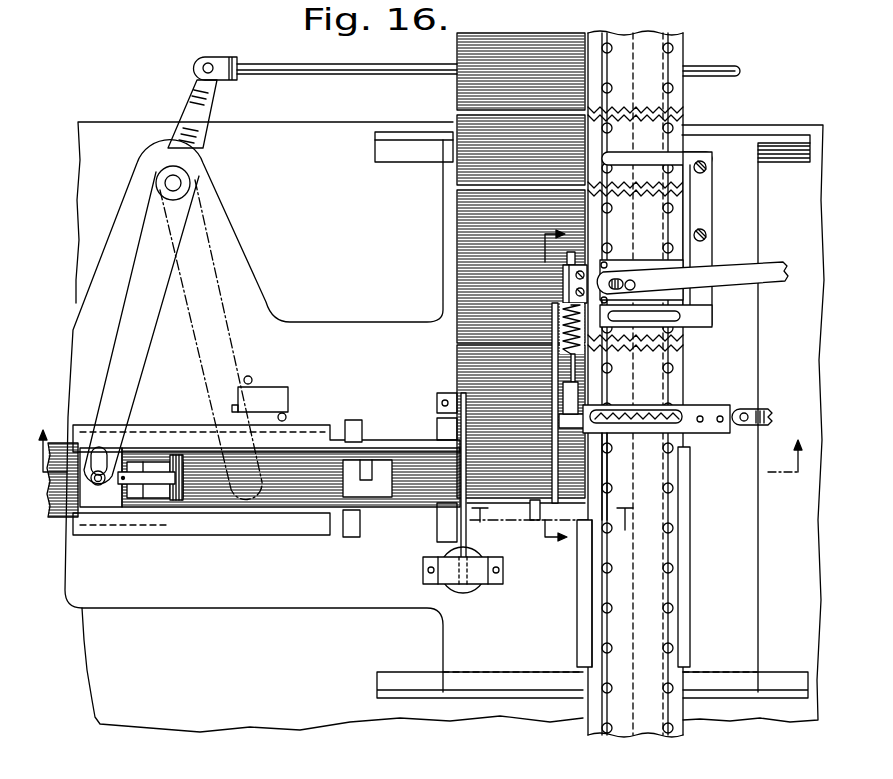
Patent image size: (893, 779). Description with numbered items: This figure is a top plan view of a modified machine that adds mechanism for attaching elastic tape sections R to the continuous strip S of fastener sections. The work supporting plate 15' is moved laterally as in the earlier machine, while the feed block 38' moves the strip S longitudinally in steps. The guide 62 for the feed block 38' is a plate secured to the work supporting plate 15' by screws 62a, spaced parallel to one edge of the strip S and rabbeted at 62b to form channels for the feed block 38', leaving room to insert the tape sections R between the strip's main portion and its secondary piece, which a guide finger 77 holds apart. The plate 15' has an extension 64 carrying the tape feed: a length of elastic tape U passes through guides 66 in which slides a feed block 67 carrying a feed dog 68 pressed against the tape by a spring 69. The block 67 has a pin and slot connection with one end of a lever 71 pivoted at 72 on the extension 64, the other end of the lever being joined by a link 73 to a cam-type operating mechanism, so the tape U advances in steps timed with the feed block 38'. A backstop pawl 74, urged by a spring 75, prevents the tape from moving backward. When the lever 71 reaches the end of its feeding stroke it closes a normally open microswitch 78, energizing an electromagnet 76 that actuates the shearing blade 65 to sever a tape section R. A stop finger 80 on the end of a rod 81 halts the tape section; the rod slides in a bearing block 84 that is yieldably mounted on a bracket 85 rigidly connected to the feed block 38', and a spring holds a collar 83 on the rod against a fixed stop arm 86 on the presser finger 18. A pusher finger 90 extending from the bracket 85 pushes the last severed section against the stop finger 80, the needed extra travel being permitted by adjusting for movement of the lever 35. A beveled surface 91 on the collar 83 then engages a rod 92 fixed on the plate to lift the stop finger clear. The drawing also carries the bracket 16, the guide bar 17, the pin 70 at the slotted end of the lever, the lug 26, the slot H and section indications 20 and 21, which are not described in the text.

The work supporting plate 15' is at (746, 129).
The bracket 16 is at (415, 136).
The guide bar 17 is at (703, 627).
The presser finger 18 is at (688, 408).
The section line 20 is at (424, 438).
The section line 21 is at (530, 539).
The lug 26 is at (768, 413).
The lever 35 is at (770, 280).
The feed block 38' is at (695, 278).
The guide 62 is at (687, 158).
The screws 62a is at (700, 230).
The rabbet 62b is at (680, 193).
The extension 64 is at (343, 322).
The shearing blade 65 is at (463, 432).
The guides 66 is at (240, 520).
The feed block 67 is at (152, 462).
The feed dog 68 is at (182, 460).
The spring 69 is at (160, 472).
The pin 70 is at (98, 470).
The lever 71 is at (130, 340).
The pivot 72 is at (178, 182).
The link 73 is at (317, 72).
The backstop pawl 74 is at (376, 520).
The spring 75 is at (362, 460).
The electromagnet 76 is at (462, 592).
The guide finger 77 is at (615, 542).
The microswitch 78 is at (262, 395).
The stop finger 80 is at (570, 418).
The rod 81 is at (550, 320).
The collar 83 is at (572, 393).
The bearing block 84 is at (567, 258).
The bracket 85 is at (563, 283).
The stop arm 86 is at (608, 460).
The pusher finger 90 is at (535, 518).
The beveled surface 91 is at (560, 237).
The rod 92 is at (607, 340).
The slot H is at (650, 424).
The elastic tape sections R is at (465, 355).
The strip S is at (638, 715).
The elastic tape U is at (210, 520).